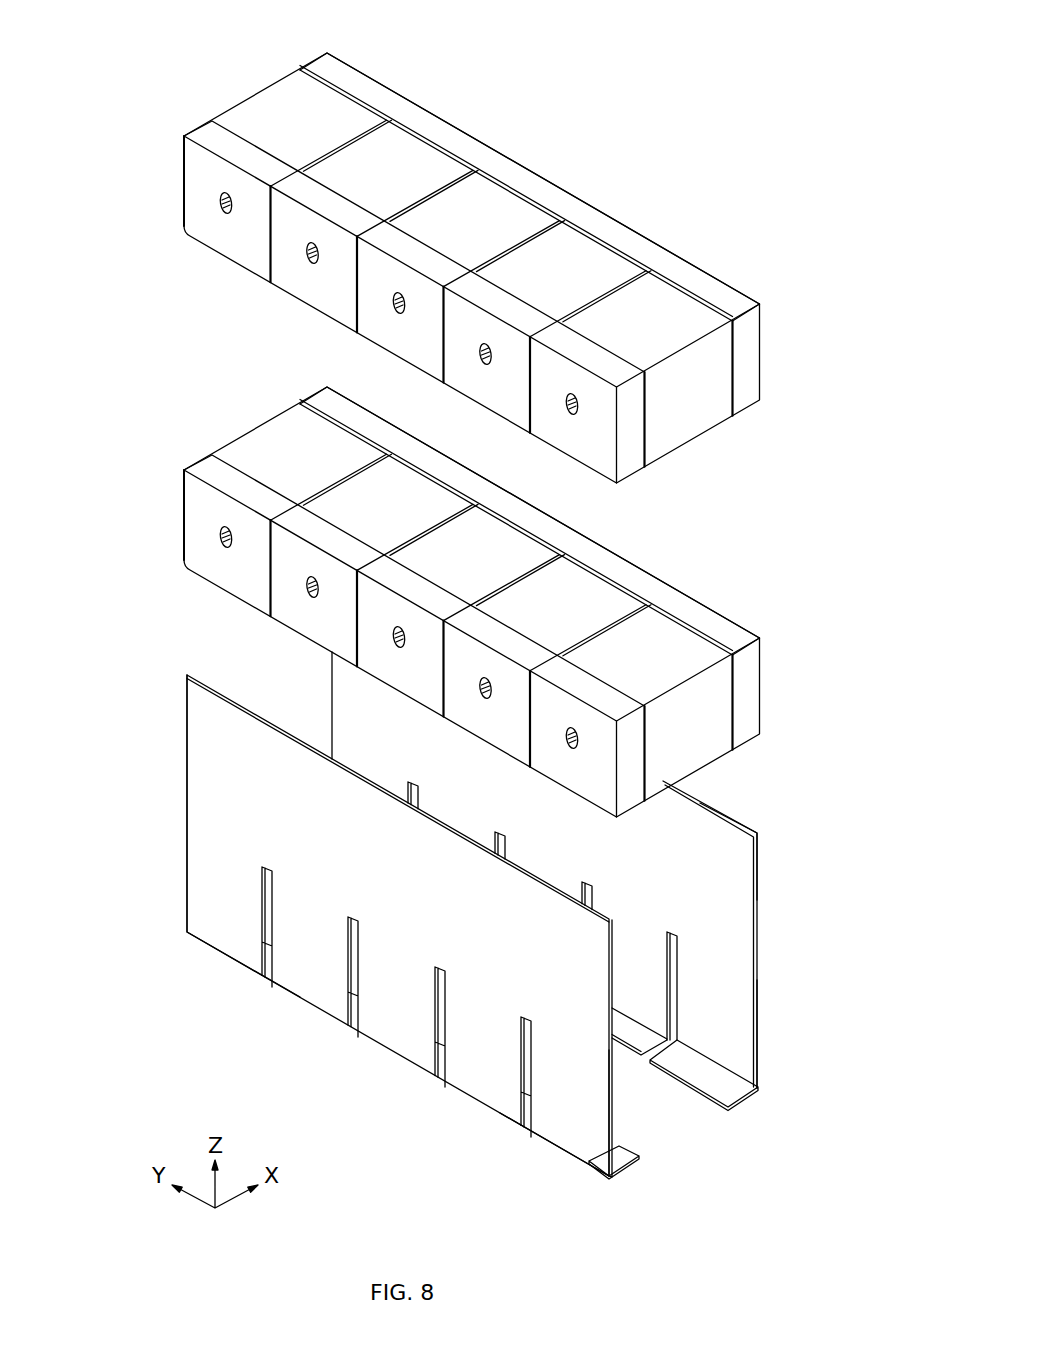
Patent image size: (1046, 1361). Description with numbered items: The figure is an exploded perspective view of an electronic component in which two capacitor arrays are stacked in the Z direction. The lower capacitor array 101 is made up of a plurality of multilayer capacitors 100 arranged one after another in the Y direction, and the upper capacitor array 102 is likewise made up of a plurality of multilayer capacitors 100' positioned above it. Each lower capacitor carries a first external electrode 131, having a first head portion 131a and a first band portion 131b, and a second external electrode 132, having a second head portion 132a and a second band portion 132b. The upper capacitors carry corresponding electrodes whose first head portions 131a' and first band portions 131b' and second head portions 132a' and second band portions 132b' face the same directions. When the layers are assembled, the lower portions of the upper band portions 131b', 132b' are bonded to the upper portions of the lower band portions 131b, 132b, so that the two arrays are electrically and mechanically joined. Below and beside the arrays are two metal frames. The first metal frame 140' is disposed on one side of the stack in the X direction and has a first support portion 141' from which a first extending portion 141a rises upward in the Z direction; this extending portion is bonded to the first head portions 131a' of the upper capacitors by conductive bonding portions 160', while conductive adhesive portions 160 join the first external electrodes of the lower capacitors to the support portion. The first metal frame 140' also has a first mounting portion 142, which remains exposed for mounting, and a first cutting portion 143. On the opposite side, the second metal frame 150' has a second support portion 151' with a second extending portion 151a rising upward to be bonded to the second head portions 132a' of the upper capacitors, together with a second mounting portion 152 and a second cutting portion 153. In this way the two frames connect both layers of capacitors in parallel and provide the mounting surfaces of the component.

The multilayer capacitor 100 is at (473, 643).
The multilayer capacitor 100' is at (476, 309).
The capacitor array 101 is at (238, 435).
The capacitor array 102 is at (256, 92).
The first external electrode 131 is at (347, 557).
The first head portion 131a is at (150, 515).
The first band portion 131b is at (373, 557).
The first head portion 131a' is at (143, 181).
The first band portion 131b' is at (399, 224).
The second external electrode 132 is at (480, 483).
The second head portion 132a is at (506, 483).
The second band portion 132b is at (493, 504).
The second head portion 132a' is at (530, 175).
The second band portion 132b' is at (509, 165).
The conductive adhesive portion 160 is at (351, 638).
The conductive bonding portion 160' is at (351, 304).
The first metal frame 140' is at (442, 953).
The first extending portion 141a is at (507, 933).
The first support portion 141' is at (599, 1130).
The first mounting portion 142 is at (600, 1153).
The first cutting portion 143 is at (522, 1083).
The second metal frame 150' is at (591, 915).
The second extending portion 151a is at (730, 878).
The second support portion 151' is at (786, 1034).
The second mounting portion 152 is at (733, 1088).
The second cutting portion 153 is at (677, 981).